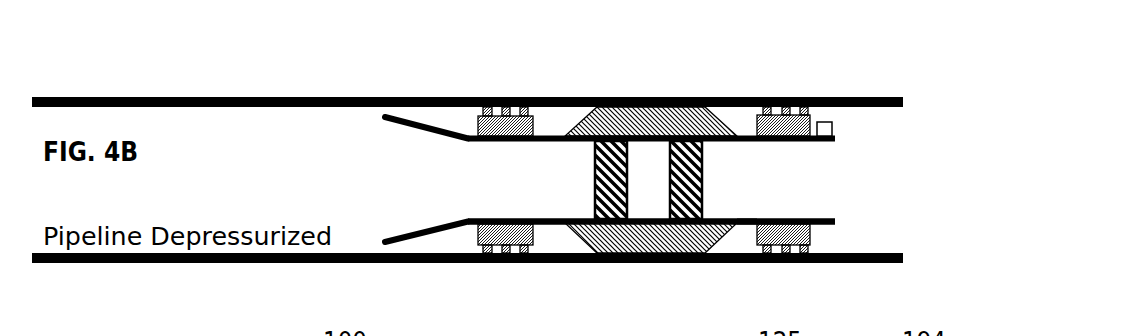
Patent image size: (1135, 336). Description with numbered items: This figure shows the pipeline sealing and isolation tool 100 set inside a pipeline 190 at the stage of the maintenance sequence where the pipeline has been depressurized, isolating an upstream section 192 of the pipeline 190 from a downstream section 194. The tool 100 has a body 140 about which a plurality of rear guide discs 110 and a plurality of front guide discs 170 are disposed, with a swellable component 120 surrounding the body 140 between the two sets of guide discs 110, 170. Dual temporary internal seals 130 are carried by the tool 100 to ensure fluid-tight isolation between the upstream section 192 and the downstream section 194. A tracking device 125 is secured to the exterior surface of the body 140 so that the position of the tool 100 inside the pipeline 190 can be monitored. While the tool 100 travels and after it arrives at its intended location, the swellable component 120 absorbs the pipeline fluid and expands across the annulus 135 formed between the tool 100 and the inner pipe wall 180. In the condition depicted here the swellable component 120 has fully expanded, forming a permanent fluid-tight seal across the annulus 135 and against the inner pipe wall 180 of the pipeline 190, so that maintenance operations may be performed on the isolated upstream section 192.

The pipeline sealing and isolation tool 100 is at (422, 82).
The rear guide discs 110 is at (487, 107).
The swellable component 120 is at (595, 98).
The tracking device 125 is at (822, 122).
The temporary seal 130 is at (618, 137).
The annulus 135 is at (557, 245).
The body 140 is at (752, 225).
The front guide discs 170 is at (805, 263).
The inner pipe wall 180 is at (192, 108).
The pipeline 190 is at (209, 97).
The upstream section 192 is at (136, 97).
The downstream section 194 is at (852, 97).